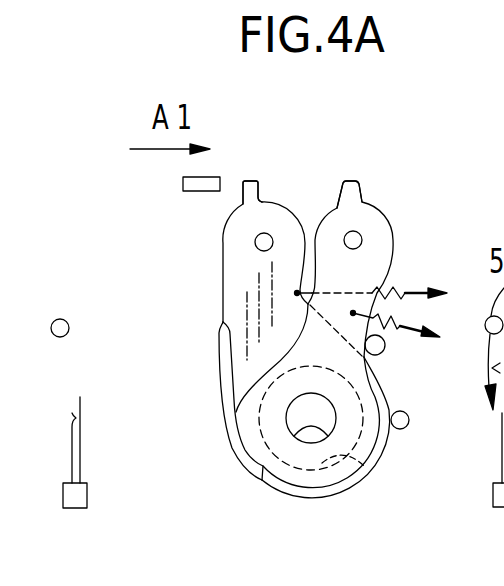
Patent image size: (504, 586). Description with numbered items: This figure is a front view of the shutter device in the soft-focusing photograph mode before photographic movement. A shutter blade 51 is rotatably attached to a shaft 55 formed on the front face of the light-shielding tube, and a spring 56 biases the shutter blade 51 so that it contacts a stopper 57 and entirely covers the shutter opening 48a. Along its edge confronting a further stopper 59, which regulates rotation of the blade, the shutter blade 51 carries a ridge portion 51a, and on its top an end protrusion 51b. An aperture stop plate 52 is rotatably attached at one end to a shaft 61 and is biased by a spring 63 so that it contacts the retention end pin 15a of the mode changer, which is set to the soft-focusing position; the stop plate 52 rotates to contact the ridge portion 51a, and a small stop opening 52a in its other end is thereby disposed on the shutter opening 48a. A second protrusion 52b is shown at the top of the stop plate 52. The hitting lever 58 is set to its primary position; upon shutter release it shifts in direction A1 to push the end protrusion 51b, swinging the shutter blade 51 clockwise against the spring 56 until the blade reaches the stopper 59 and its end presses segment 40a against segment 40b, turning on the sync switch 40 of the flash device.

The shutter blade 51 is at (206, 242).
The ridge portion 51a is at (226, 424).
The end protrusion 51b is at (250, 179).
The aperture stop plate 52 is at (400, 212).
The stop opening 52a is at (290, 436).
The projection of second arm 52b is at (349, 179).
The shaft 55 is at (268, 237).
The shaft 61 is at (356, 237).
The spring 56 is at (396, 288).
The spring 63 is at (402, 333).
The retention end pin 15a is at (381, 355).
The stopper 57 is at (407, 427).
The hitting lever 58 is at (183, 183).
The stopper 59 is at (69, 322).
The shutter opening 48a is at (360, 475).
The sync switch 40 is at (126, 452).
The segment 40a is at (80, 411).
The segment 40b is at (132, 403).